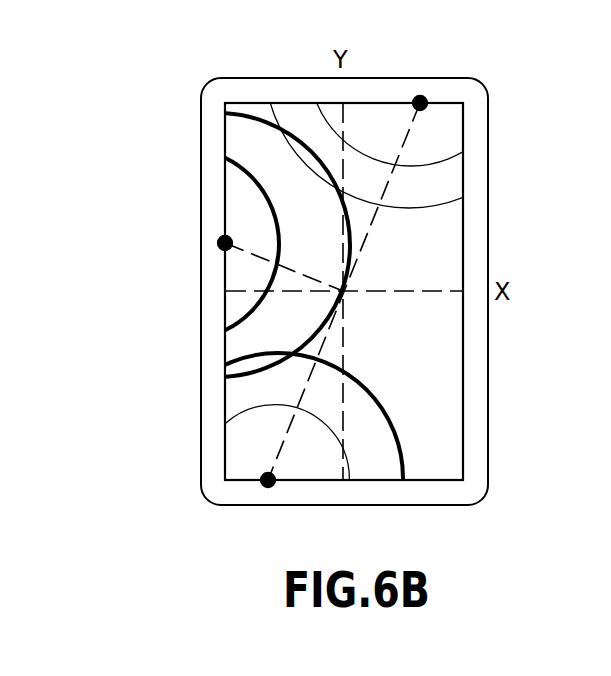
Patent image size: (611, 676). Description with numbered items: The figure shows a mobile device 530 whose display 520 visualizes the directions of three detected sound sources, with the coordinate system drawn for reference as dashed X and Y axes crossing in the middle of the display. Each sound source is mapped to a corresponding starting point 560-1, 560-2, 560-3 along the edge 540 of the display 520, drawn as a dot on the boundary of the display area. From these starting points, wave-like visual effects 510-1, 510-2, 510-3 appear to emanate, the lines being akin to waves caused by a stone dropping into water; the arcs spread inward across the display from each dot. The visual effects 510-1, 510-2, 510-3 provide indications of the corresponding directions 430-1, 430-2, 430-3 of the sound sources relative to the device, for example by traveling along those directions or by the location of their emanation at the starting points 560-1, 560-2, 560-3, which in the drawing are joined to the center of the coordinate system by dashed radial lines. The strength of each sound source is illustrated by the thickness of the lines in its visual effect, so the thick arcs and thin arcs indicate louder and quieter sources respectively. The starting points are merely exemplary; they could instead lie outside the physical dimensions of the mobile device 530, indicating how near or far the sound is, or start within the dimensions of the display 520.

The direction 430-1 is at (408, 137).
The direction 430-2 is at (250, 255).
The direction 430-3 is at (283, 447).
The visual effect 510-1 is at (443, 120).
The visual effect 510-2 is at (190, 226).
The visual effect 510-3 is at (242, 460).
The display 520 is at (455, 362).
The mobile device 530 is at (375, 505).
The edge 540 is at (227, 403).
The starting point 560-1 is at (420, 97).
The starting point 560-2 is at (224, 245).
The starting point 560-3 is at (268, 486).